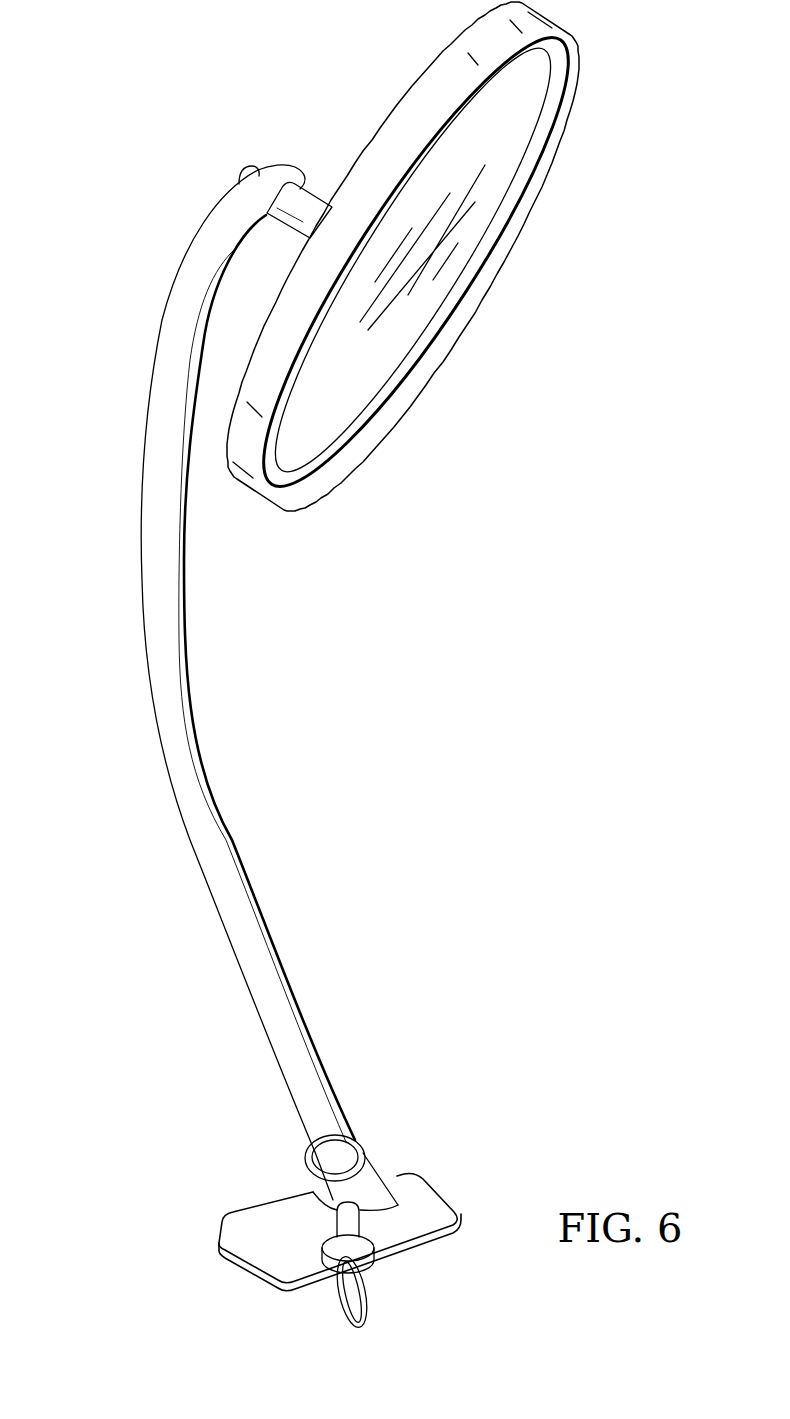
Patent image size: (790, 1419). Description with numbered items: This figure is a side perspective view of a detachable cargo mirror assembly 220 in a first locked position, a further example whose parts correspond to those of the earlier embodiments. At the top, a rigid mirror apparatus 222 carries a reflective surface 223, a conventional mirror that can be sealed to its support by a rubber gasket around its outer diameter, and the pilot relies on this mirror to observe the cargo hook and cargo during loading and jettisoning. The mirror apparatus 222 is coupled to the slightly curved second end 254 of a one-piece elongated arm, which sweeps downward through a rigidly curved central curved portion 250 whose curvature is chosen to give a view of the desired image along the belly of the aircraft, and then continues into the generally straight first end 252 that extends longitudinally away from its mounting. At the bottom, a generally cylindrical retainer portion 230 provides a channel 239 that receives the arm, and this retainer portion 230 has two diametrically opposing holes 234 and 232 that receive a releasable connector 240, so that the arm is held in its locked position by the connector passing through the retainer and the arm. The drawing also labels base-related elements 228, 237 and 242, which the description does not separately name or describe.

The detachable cargo mirror assembly 220 is at (118, 158).
The mirror apparatus 222 is at (570, 52).
The reflective surface 223 is at (367, 392).
The second end 254 is at (222, 229).
The central curved portion 250 is at (138, 688).
The first end 252 is at (233, 931).
The channel 239 is at (350, 1142).
The hole 234 is at (311, 1158).
The hole 232 is at (374, 1158).
The retainer portion 230 is at (433, 1193).
The base plate 228 is at (261, 1252).
The pin 237 is at (333, 1197).
The knob disk 242 is at (353, 1223).
The releasable connector 240 is at (361, 1263).